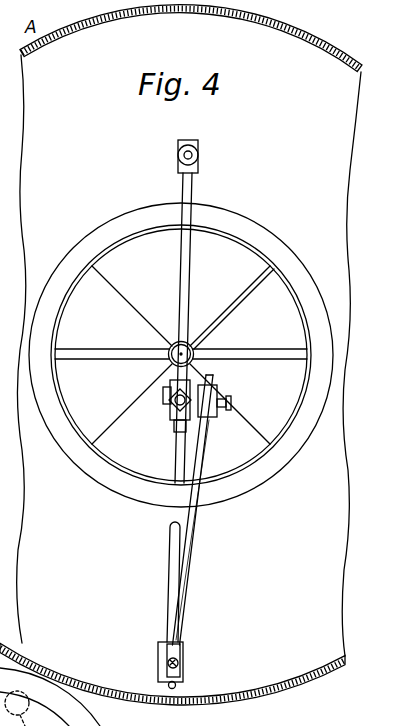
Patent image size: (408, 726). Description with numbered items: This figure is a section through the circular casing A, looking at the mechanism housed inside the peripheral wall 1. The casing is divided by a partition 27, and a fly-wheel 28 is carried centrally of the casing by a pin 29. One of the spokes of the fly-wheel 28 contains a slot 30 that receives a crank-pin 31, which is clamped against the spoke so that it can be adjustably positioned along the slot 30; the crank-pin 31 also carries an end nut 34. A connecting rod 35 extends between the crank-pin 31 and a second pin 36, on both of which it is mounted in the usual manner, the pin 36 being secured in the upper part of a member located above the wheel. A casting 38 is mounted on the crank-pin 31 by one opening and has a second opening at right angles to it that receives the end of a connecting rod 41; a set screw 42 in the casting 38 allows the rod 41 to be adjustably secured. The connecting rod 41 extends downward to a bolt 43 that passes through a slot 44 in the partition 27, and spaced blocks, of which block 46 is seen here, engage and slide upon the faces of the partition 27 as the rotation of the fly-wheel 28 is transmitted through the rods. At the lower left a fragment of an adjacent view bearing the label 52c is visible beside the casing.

The peripheral wall 1 is at (201, 15).
The partition 27 is at (273, 136).
The fly-wheel 28 is at (181, 355).
The pin 29 is at (168, 349).
The slot 30 is at (175, 427).
The crank-pin 31 is at (165, 392).
The end nut 34 is at (170, 404).
The connecting rod 35 is at (184, 187).
The second pin 36 is at (178, 156).
The casting 38 is at (210, 392).
The connecting rod 41 is at (189, 582).
The set screw 42 is at (232, 403).
The bolt 43 is at (178, 664).
The slot 44 is at (170, 547).
The block 46 is at (158, 656).
The wheel 52c is at (30, 705).